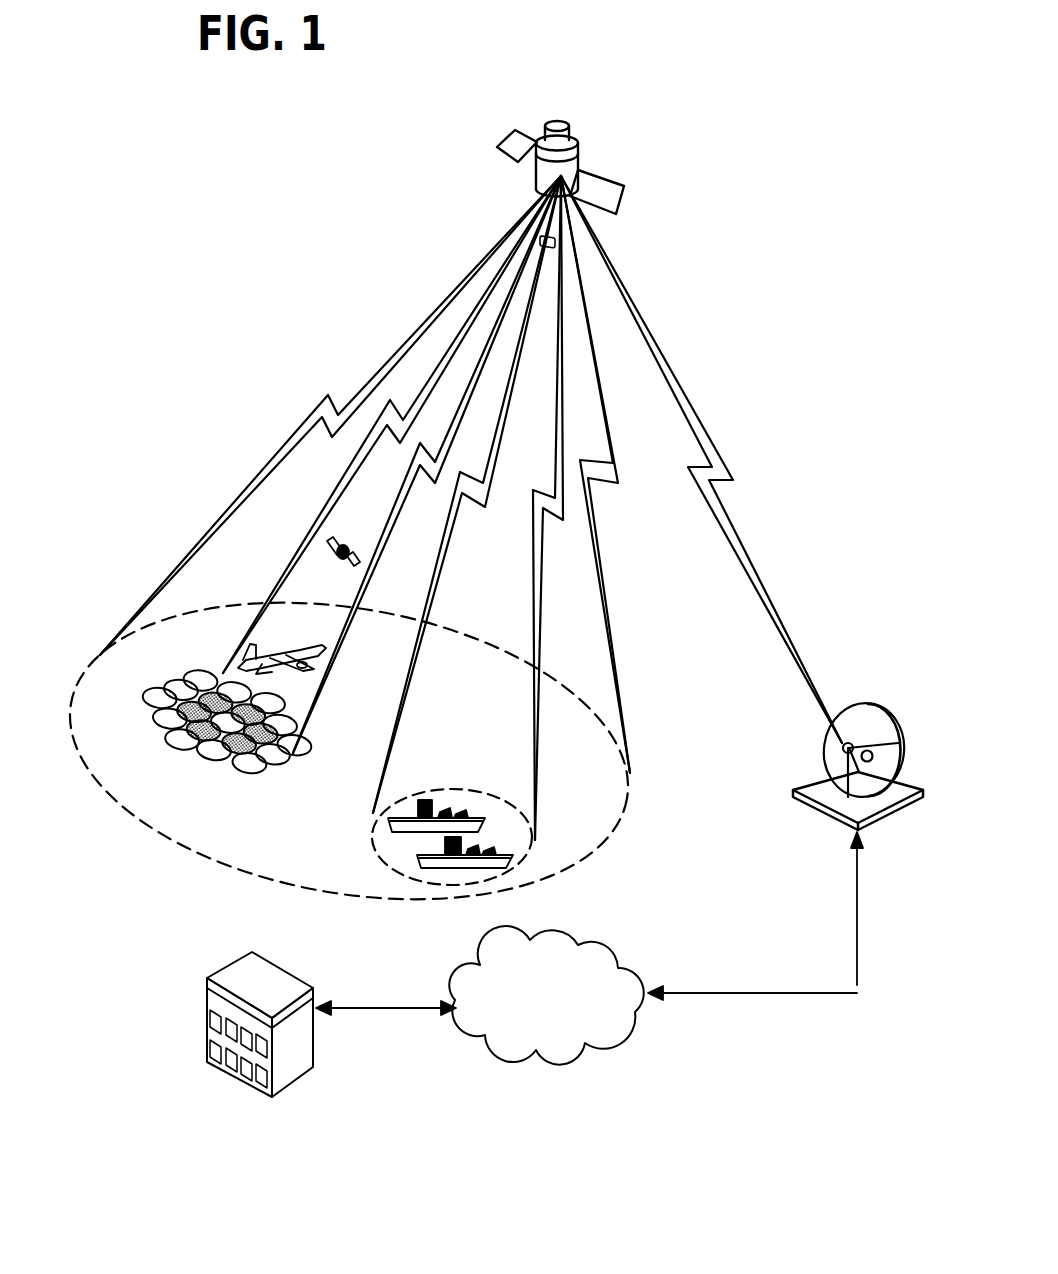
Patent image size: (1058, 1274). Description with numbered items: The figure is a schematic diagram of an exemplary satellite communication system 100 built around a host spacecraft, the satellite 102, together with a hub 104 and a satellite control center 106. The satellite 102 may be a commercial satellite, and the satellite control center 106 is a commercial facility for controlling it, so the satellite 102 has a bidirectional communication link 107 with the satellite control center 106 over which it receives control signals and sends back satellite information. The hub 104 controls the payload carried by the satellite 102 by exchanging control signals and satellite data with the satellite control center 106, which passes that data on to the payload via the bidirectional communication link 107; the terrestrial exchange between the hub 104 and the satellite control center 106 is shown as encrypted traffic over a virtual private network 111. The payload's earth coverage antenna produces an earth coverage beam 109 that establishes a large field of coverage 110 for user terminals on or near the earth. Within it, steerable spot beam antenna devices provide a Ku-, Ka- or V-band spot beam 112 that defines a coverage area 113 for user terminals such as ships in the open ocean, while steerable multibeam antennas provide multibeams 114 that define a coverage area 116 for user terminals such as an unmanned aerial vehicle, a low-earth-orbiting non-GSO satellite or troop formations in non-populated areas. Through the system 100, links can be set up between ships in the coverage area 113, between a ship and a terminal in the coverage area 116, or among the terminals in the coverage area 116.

The satellite communication system 100 is at (99, 252).
The satellite 102 is at (622, 190).
The hub 104 is at (207, 1000).
The satellite control center (SCC) 106 is at (872, 700).
The bidirectional communication link 107 is at (690, 393).
The earth coverage beam 109 is at (268, 466).
The field of coverage 110 is at (116, 803).
The virtual private network (VPN) 111 is at (632, 1018).
The spot beam 112 is at (392, 743).
The coverage area 113 is at (535, 852).
The multibeams 114 is at (310, 537).
The coverage area 116 is at (163, 733).